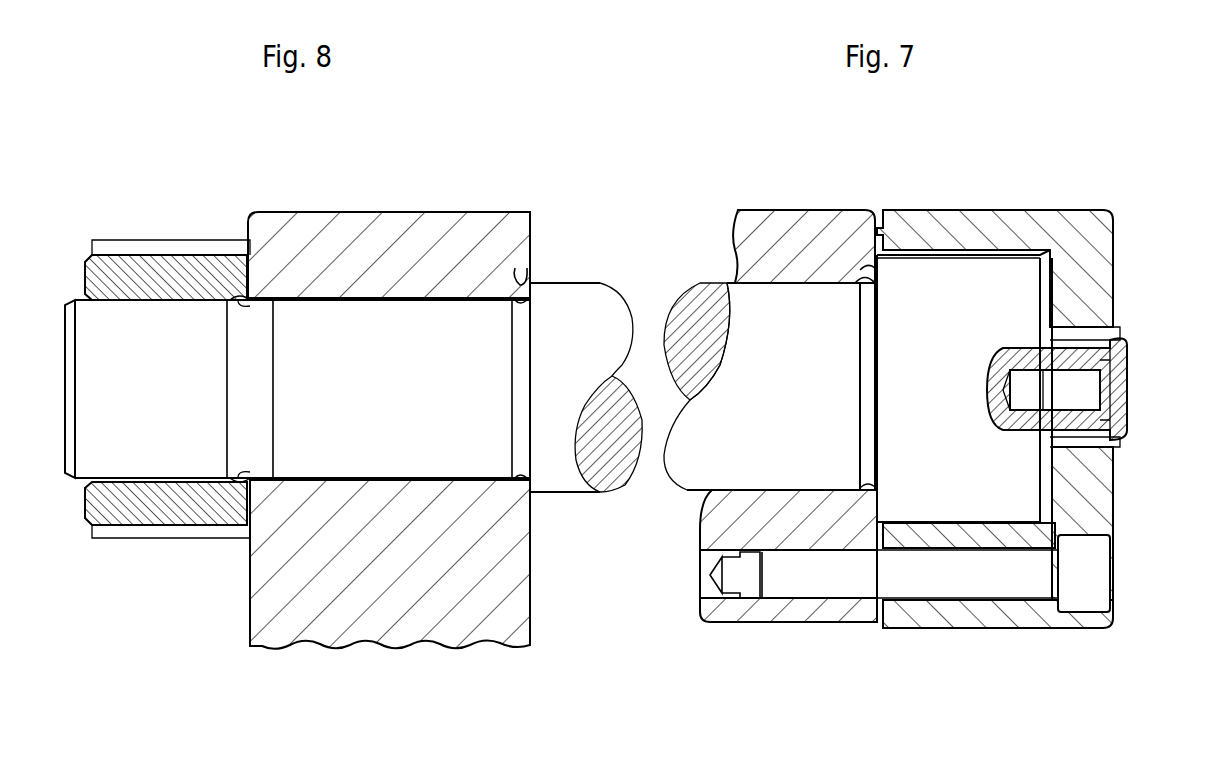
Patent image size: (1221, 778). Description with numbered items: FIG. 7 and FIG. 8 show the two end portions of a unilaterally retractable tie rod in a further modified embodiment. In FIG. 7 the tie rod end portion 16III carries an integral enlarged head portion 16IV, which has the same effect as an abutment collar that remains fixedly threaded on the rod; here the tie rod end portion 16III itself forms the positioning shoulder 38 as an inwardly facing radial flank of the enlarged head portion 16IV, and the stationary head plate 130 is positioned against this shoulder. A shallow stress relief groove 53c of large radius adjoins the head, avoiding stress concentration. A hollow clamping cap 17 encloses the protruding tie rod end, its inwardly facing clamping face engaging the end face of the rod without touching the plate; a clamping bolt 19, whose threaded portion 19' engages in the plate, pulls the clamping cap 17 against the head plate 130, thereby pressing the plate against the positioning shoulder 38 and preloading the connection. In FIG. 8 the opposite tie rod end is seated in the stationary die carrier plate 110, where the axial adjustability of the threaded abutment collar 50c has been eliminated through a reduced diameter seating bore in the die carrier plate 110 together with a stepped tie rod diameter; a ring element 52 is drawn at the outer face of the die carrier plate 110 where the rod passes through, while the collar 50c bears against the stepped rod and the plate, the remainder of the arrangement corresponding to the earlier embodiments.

In FIG. 8, the stationary die carrier plate 110 is at (473, 224).
In FIG. 8, the seal ring 52 is at (530, 262).
In FIG. 8, the abutment collar 50c is at (125, 512).
In FIG. 8, the positioning shoulder 38 is at (240, 510).
In FIG. 7, the positioning shoulder 38 is at (858, 275).
In FIG. 7, the stationary head plate 130 is at (812, 224).
In FIG. 7, the tie rod end portion 16III is at (710, 462).
In FIG. 7, the enlarged head portion 16IV is at (918, 230).
In FIG. 7, the clamping cap 17 is at (1010, 226).
In FIG. 7, the stress relief groove 53c is at (868, 370).
In FIG. 7, the clamping bolt 19 is at (1112, 573).
In FIG. 7, the threaded portion 19' is at (885, 628).